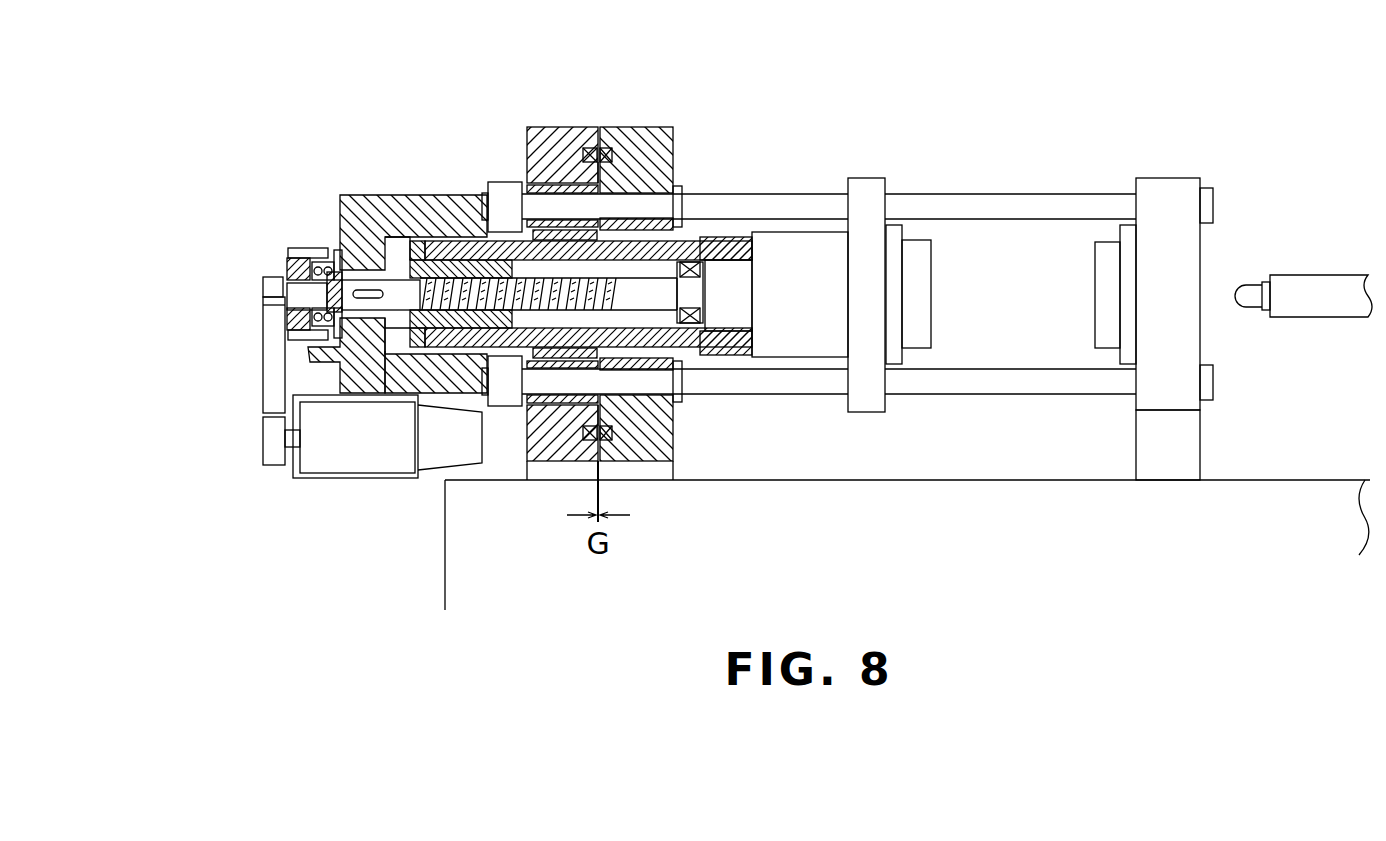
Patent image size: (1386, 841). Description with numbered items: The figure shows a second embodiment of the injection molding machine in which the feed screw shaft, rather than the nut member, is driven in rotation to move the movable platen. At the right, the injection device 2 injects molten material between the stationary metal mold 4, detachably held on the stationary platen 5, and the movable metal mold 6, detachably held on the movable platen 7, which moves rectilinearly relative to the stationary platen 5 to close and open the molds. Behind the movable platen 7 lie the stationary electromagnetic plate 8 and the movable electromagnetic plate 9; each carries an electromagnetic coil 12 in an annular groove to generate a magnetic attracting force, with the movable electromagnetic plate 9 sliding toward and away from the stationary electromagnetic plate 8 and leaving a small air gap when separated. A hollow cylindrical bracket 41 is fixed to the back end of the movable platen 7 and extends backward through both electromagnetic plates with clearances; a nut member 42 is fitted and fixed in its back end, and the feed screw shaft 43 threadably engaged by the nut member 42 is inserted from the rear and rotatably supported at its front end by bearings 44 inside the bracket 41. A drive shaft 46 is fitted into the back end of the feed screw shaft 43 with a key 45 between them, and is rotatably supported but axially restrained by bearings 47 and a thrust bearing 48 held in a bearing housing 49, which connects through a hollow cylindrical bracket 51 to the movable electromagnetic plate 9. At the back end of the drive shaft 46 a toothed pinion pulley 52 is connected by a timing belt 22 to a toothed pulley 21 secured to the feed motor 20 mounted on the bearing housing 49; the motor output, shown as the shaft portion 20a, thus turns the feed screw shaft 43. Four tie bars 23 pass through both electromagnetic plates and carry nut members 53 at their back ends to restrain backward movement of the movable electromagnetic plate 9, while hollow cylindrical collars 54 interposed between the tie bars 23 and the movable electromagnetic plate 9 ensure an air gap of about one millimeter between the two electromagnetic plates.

The injection device 2 is at (1308, 277).
The stationary metal mold 4 is at (1128, 362).
The stationary platen 5 is at (1178, 185).
The movable metal mold 6 is at (913, 350).
The movable platen 7 is at (877, 178).
The stationary electromagnetic plate 8 is at (643, 140).
The movable electromagnetic plate 9 is at (553, 140).
The electromagnetic coil 12 is at (607, 150).
The feed motor 20 is at (340, 468).
The motor shaft 20a is at (289, 475).
The toothed pulley 21 is at (268, 456).
The timing belt 22 is at (272, 385).
The tie bars 23 is at (1047, 193).
The hollow cylindrical bracket 41 is at (713, 235).
The nut member 42 is at (472, 250).
The feed screw shaft 43 is at (411, 272).
The bearings 44 is at (690, 325).
The key 45 is at (373, 290).
The drive shaft 46 is at (300, 258).
The bearings 47 is at (332, 250).
The thrust bearing 48 is at (292, 266).
The bearing housing 49 is at (362, 380).
The hollow cylindrical bracket 51 is at (453, 382).
The toothed pinion pulley 52 is at (268, 283).
The nut members 53 is at (500, 183).
The hollow cylindrical collars 54 is at (548, 188).